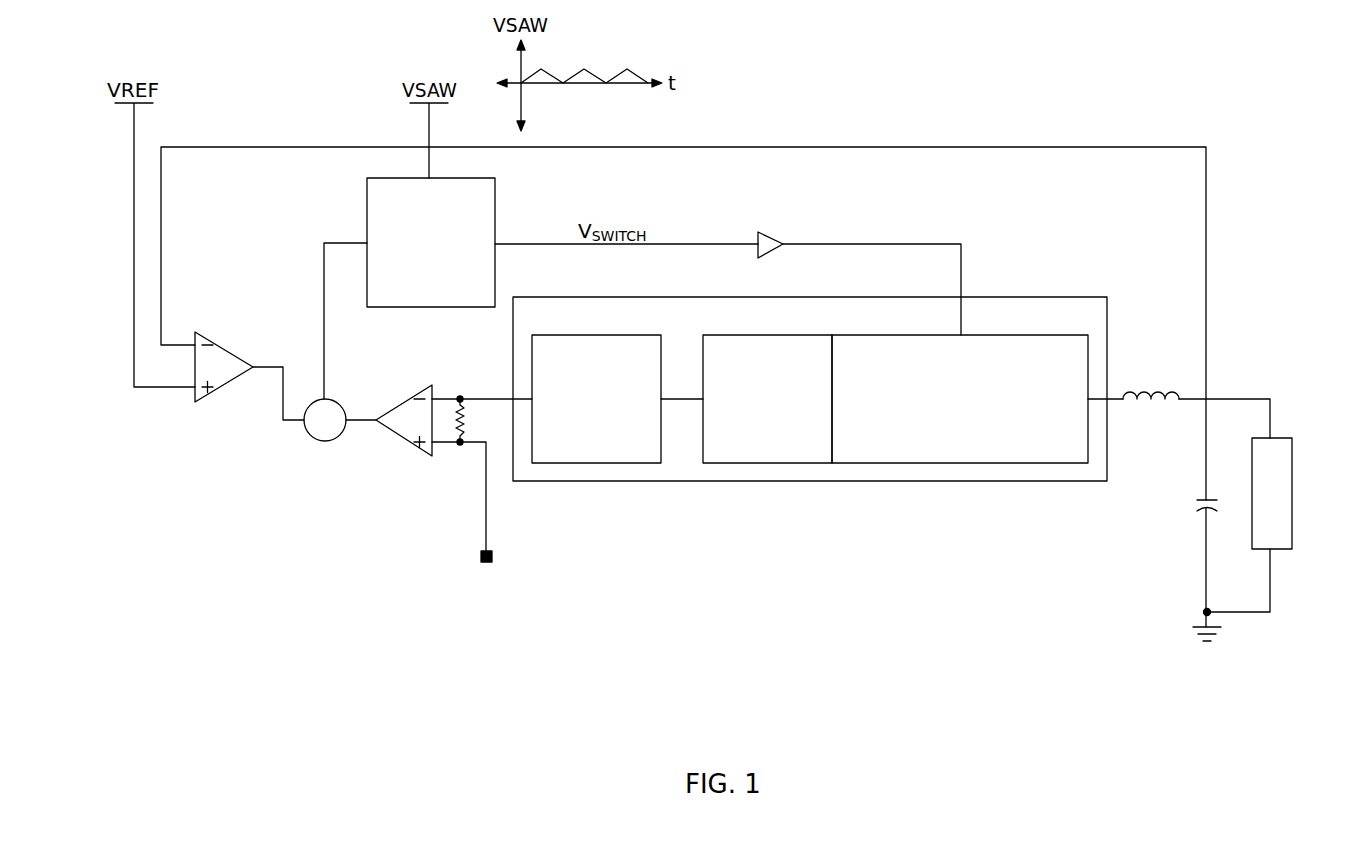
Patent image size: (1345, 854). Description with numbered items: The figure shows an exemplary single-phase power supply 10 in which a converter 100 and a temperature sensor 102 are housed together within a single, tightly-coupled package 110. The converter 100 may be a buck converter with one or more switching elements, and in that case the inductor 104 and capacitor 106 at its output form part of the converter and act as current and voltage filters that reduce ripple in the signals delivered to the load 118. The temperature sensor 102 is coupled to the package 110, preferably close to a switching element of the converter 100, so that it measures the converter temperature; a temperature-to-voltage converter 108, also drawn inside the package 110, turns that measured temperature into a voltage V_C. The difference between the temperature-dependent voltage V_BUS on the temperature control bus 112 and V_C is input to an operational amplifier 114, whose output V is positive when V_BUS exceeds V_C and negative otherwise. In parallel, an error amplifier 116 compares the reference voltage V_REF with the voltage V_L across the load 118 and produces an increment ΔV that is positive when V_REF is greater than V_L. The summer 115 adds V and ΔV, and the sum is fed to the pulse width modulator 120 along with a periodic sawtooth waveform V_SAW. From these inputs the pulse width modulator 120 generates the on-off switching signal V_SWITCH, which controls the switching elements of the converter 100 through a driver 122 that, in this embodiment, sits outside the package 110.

The single-phase power supply 10 is at (291, 629).
The converter 100 is at (990, 333).
The temperature sensor 102 is at (770, 333).
The inductor 104 is at (1145, 392).
The capacitor 106 is at (1195, 505).
The temperature-to-voltage converter 108 is at (662, 356).
The package 110 is at (1075, 297).
The temperature control bus 112 is at (483, 533).
The operational amplifier 114 is at (410, 444).
The summer 115 is at (305, 431).
The error amplifier 116 is at (223, 345).
The load 118 is at (1262, 550).
The pulse width modulator 120 is at (435, 308).
The driver 122 is at (758, 237).